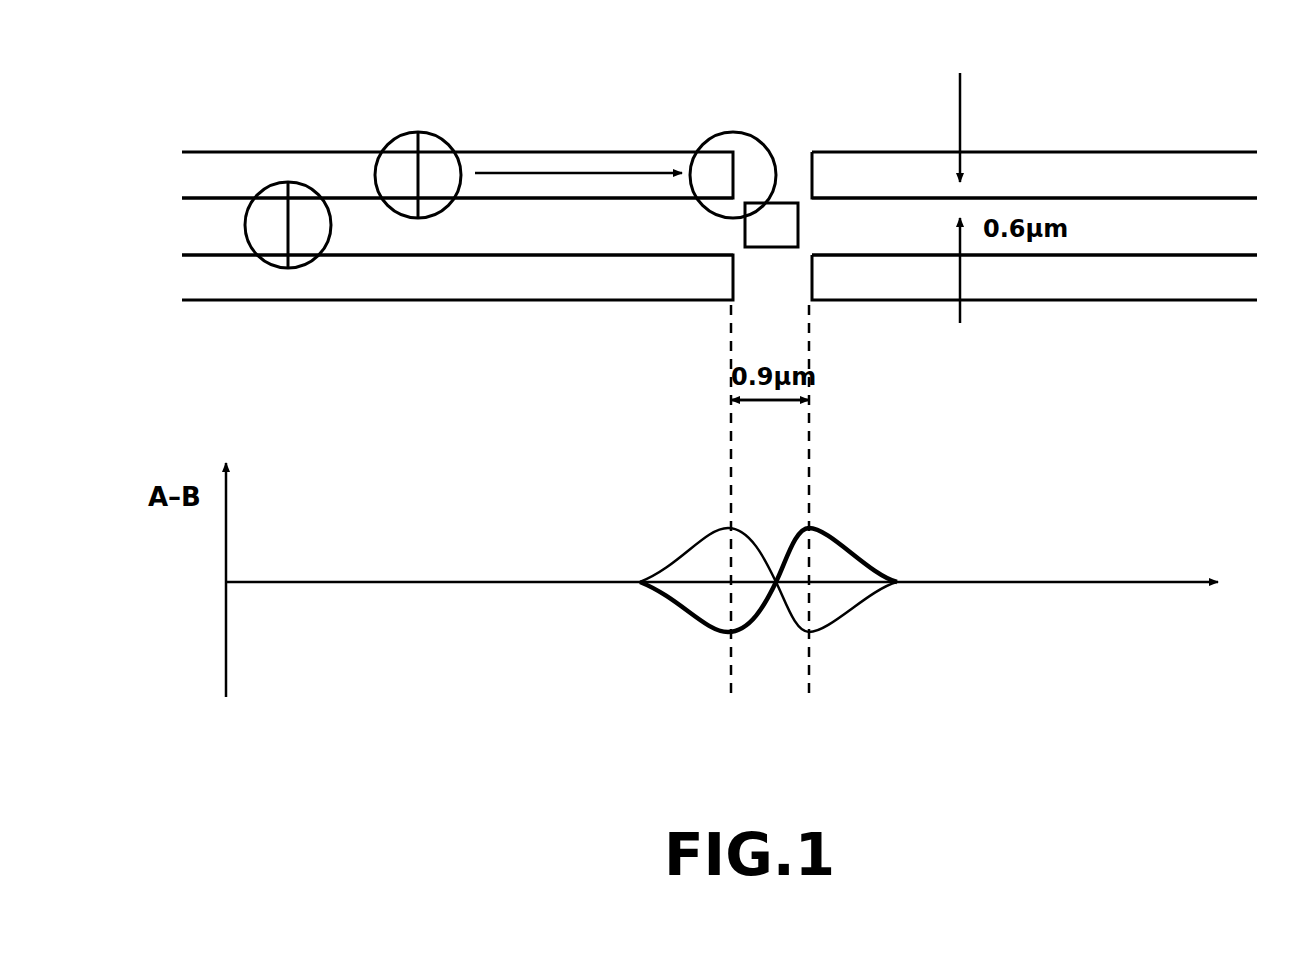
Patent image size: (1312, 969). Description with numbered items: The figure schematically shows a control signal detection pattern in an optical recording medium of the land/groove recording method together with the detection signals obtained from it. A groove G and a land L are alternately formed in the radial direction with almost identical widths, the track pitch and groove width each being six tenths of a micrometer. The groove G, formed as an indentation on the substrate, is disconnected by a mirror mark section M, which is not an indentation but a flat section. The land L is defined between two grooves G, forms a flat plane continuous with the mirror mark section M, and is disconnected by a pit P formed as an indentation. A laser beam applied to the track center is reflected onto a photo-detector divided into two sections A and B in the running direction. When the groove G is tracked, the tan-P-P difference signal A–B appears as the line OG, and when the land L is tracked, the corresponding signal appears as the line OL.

The groove G is at (721, 226).
The land L is at (721, 226).
The photo-detector section A is at (353, 200).
The photo-detector section B is at (368, 203).
The mirror mark section M is at (782, 160).
The pit P is at (800, 229).
The line OG is at (848, 550).
The line OL is at (845, 607).